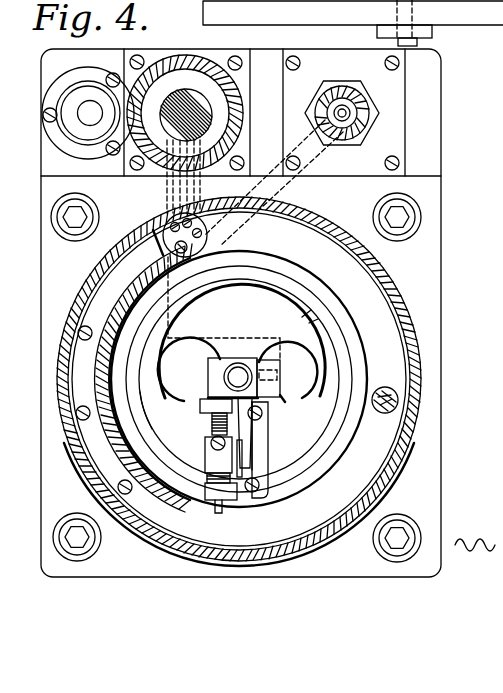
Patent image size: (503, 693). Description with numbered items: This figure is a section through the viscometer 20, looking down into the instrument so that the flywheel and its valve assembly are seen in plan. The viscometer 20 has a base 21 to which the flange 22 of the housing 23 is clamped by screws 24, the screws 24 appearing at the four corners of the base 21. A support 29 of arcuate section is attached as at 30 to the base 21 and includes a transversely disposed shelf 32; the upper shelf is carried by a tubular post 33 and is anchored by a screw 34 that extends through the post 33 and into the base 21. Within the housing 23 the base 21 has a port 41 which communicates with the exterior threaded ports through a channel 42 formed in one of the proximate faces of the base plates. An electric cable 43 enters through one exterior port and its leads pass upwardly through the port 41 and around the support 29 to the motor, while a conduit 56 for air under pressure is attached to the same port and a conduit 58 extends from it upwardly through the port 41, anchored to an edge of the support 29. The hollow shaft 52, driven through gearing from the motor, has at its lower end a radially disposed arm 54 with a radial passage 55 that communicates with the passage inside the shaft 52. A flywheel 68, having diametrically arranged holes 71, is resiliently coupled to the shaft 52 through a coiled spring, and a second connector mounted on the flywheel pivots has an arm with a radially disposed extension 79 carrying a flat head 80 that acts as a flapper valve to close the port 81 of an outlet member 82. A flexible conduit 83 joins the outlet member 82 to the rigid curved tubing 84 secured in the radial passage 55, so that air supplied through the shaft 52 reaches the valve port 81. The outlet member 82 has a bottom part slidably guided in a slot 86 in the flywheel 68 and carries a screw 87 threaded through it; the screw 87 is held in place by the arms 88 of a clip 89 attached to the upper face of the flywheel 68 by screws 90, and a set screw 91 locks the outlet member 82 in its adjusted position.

The viscometer 20 is at (424, 467).
The base 21 is at (446, 499).
The flange 22 is at (441, 310).
The housing 23 is at (408, 432).
The screws 24 is at (75, 225).
The support 29 is at (97, 358).
The attachment 30 is at (80, 427).
The shelf 32 is at (110, 375).
The tubular post 33 is at (397, 400).
The screw 34 is at (386, 388).
The port 41 is at (208, 239).
The channel 42 is at (312, 160).
The electric cable 43 is at (192, 92).
The hollow shaft 52 is at (230, 365).
The radially disposed arm 54 is at (250, 358).
The radial passage 55 is at (285, 403).
The conduit 56 is at (348, 86).
The conduit 58 is at (266, 181).
The flywheel 68 is at (316, 461).
The holes 71 is at (168, 368).
The radially disposed extension 79 is at (250, 428).
The flat head 80 is at (243, 477).
The port 81 is at (241, 500).
The outlet member 82 is at (212, 465).
The flexible conduit 83 is at (158, 328).
The rigid curved tubing 84 is at (313, 361).
The slot 86 is at (212, 423).
The screw 87 is at (216, 507).
The arms 88 is at (212, 402).
The clip 89 is at (268, 452).
The screws 90 is at (267, 497).
The set screw 91 is at (140, 415).